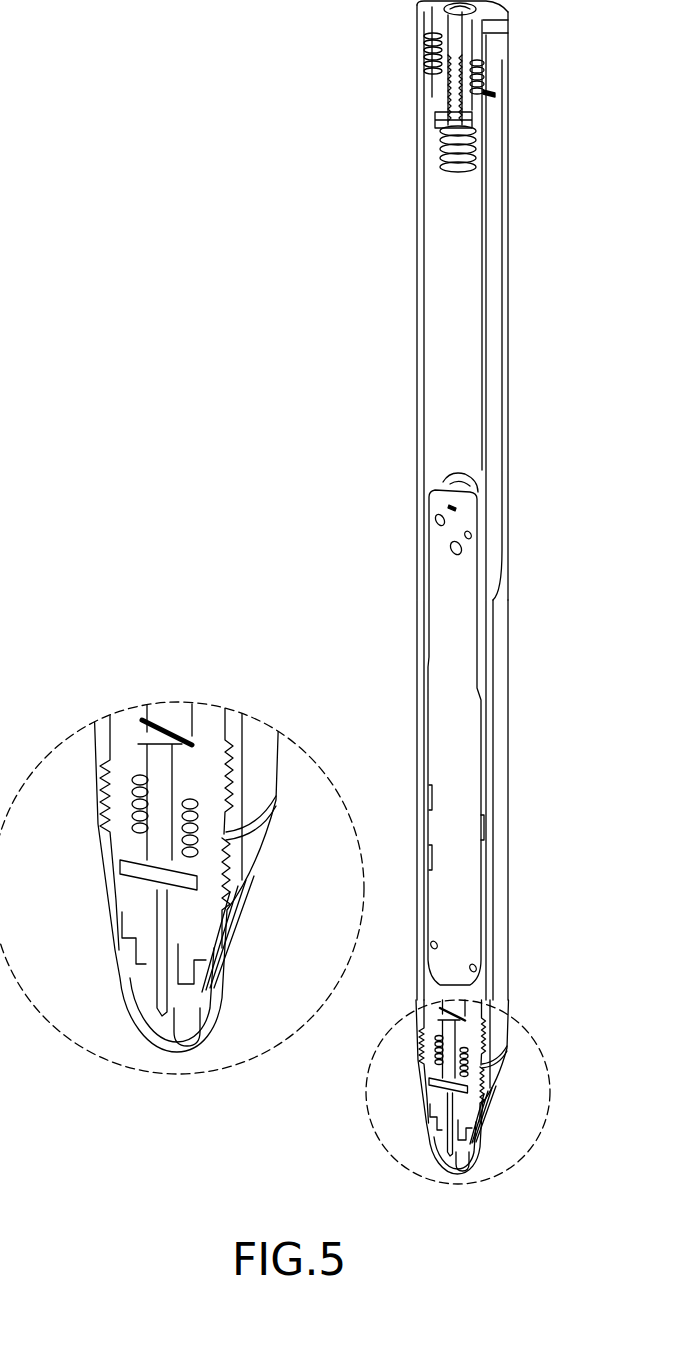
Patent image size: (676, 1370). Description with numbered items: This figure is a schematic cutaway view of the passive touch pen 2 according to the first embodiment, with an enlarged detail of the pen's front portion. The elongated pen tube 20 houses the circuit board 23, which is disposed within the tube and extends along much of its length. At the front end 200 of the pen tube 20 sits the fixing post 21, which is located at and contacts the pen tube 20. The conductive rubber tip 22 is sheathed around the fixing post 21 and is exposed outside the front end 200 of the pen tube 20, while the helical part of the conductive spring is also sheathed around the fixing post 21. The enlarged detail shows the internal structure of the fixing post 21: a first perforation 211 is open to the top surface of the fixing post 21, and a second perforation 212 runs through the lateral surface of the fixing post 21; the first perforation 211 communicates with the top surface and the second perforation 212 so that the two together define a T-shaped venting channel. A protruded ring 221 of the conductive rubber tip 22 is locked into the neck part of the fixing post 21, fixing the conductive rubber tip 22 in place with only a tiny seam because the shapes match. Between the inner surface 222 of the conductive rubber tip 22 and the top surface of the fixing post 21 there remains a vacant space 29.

The passive touch pen 2 is at (269, 144).
The pen tube 20 is at (497, 222).
The front end 200 is at (502, 972).
The circuit board 23 is at (438, 732).
The fixing post 21 is at (452, 1057).
The first perforation 211 is at (167, 970).
The second perforation 212 is at (147, 883).
The conductive rubber tip 22 is at (445, 1165).
The protruded ring 221 is at (228, 905).
The inner surface 222 is at (217, 990).
The vacant space 29 is at (160, 1012).